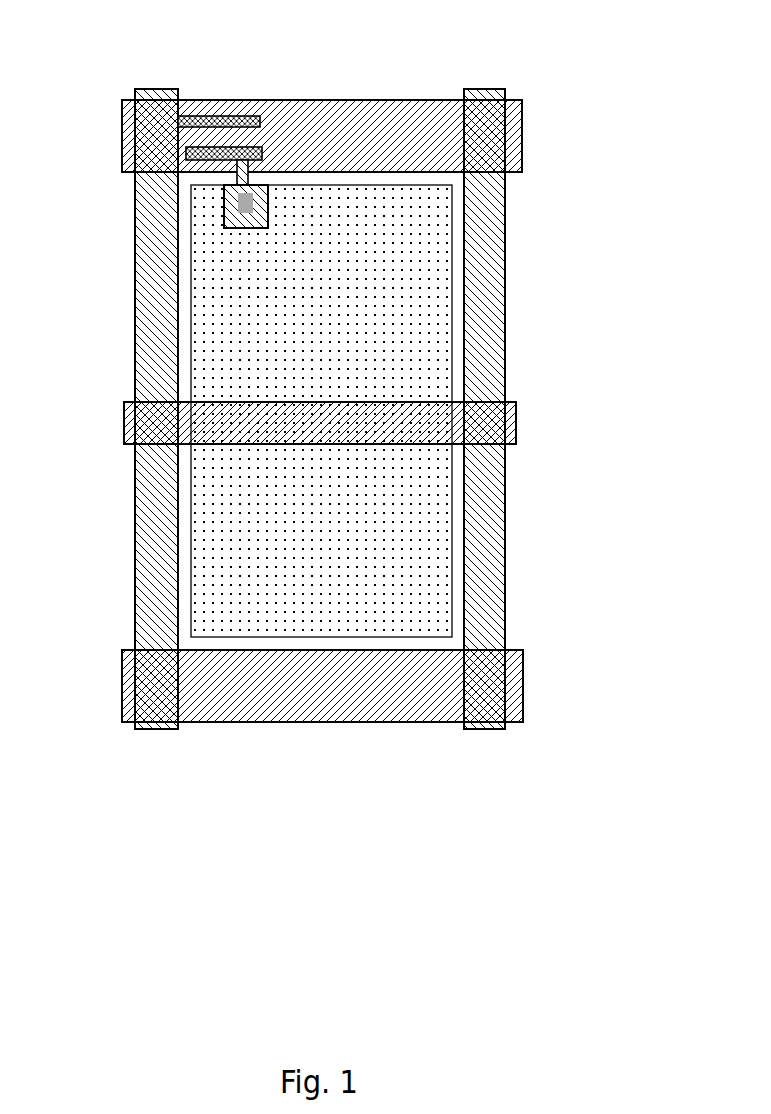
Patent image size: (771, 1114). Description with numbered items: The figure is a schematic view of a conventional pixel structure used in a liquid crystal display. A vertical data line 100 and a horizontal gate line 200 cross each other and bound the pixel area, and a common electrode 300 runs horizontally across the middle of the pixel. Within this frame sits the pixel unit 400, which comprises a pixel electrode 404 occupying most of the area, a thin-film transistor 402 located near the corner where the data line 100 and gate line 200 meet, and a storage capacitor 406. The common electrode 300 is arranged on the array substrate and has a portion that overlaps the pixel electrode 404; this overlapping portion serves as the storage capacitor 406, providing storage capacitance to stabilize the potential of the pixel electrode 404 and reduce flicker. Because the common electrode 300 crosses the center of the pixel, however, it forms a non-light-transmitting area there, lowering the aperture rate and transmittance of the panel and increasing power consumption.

The data line 100 is at (155, 253).
The gate line 200 is at (422, 130).
The common electrode 300 is at (168, 400).
The pixel unit 400 is at (265, 187).
The thin-film transistor 402 is at (233, 118).
The pixel electrode 404 is at (407, 267).
The storage capacitor 406 is at (423, 407).